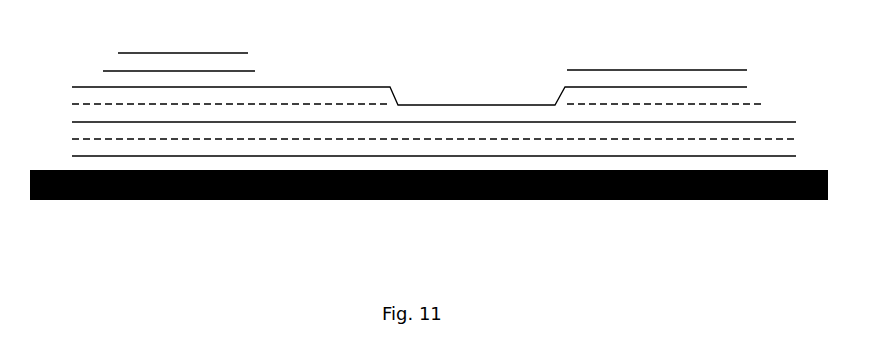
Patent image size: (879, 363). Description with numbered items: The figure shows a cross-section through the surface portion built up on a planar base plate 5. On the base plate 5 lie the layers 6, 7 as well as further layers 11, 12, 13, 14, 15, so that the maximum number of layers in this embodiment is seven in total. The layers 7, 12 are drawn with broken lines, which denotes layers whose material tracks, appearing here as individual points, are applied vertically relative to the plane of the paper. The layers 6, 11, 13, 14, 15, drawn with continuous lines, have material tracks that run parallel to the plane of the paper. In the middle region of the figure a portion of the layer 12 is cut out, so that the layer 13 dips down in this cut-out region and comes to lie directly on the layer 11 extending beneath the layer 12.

The planar base plate 5 is at (318, 207).
The layer 6 is at (420, 158).
The layer 7 is at (409, 141).
The layer 11 is at (421, 123).
The layer 12 is at (405, 101).
The layer 13 is at (563, 78).
The layer 14 is at (432, 67).
The layer 15 is at (147, 50).